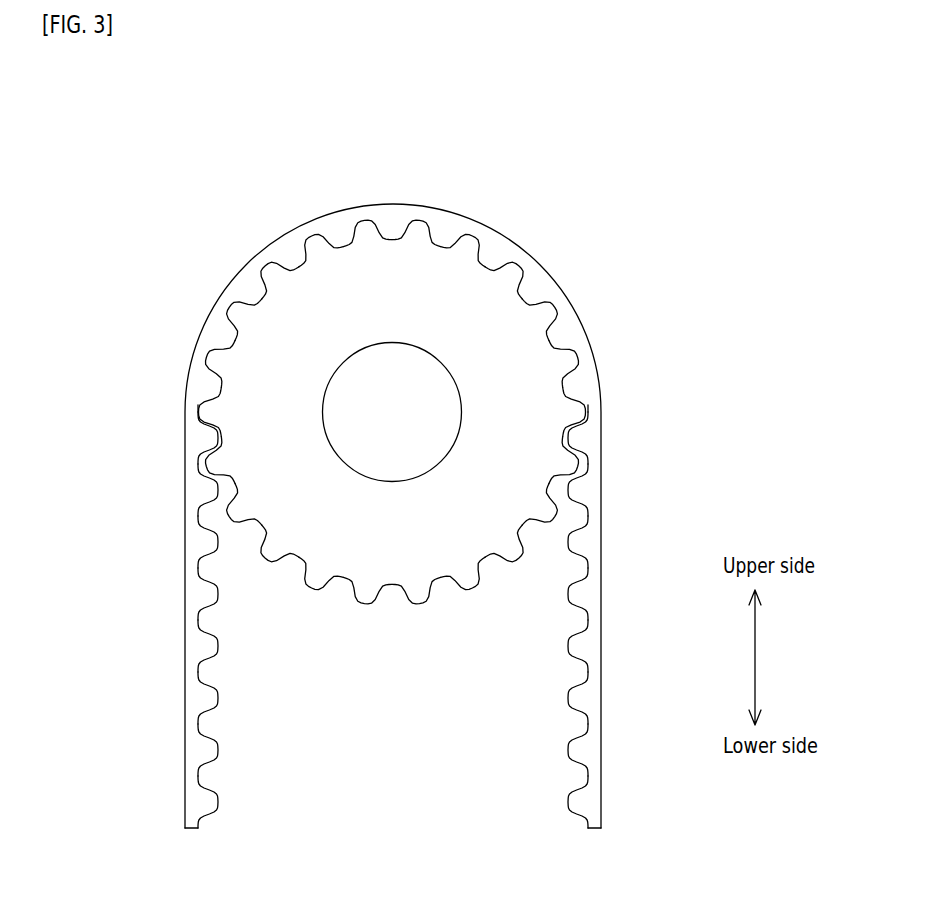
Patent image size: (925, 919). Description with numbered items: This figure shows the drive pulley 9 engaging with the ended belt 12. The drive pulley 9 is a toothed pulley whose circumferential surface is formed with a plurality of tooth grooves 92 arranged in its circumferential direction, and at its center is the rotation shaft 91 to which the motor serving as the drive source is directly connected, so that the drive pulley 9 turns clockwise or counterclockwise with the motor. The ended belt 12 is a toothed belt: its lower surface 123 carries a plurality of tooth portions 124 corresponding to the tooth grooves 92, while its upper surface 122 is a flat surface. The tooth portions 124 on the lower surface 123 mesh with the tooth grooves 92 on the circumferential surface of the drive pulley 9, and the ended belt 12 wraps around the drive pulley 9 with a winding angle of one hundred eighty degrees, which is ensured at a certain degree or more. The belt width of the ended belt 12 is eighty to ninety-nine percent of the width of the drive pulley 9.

The ended belt 12 is at (442, 467).
The upper surface 122 is at (391, 203).
The lower surface 123 is at (568, 592).
The tooth portions 124 is at (562, 496).
The drive pulley 9 is at (435, 374).
The rotation shaft 91 is at (392, 360).
The tooth grooves 92 is at (527, 528).